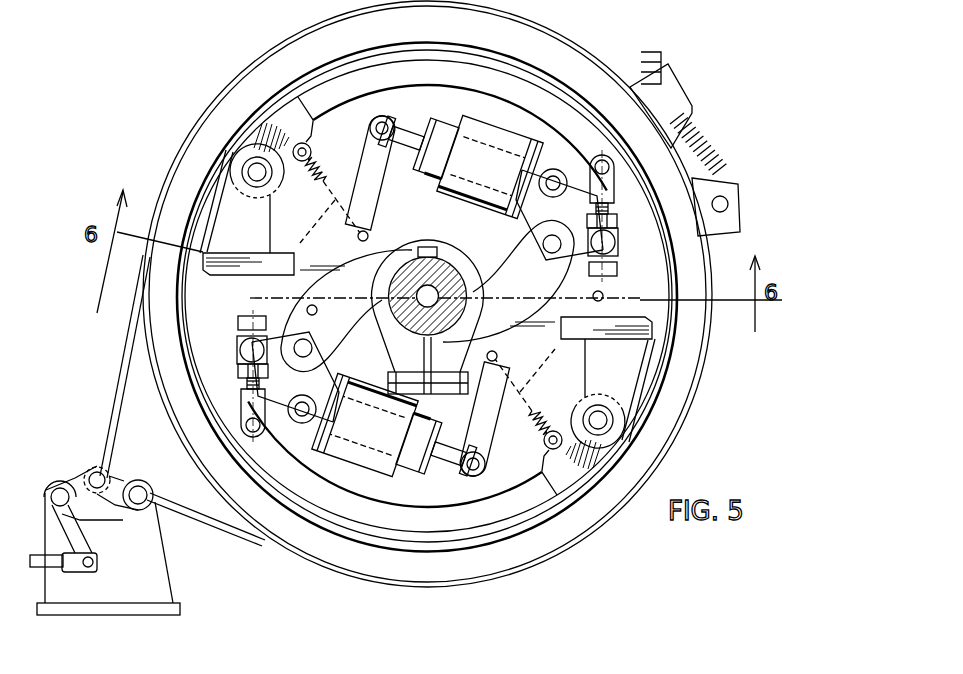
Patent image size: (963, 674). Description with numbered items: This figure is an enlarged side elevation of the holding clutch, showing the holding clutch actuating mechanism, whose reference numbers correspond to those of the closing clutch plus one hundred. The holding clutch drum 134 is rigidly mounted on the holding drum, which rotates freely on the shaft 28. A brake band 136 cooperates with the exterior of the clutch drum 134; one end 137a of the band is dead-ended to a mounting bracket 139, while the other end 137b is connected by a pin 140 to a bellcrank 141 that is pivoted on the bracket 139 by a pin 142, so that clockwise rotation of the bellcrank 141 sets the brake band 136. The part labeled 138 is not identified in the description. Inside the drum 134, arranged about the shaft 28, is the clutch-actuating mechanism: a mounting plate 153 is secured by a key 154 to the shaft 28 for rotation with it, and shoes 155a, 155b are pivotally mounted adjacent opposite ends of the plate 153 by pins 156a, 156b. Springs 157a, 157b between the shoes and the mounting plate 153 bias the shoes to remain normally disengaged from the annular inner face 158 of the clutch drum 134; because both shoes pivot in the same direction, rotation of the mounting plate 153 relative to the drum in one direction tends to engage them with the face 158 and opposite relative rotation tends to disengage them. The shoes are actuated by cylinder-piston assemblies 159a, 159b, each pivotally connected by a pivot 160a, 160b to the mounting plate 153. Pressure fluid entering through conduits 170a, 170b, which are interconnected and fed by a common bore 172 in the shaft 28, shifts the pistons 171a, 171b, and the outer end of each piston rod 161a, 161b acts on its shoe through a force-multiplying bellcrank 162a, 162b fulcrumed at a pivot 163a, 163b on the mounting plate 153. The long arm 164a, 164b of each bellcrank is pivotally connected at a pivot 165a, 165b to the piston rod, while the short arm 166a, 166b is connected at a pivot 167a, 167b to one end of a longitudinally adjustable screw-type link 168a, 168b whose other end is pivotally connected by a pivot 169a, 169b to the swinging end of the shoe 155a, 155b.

The shaft 28 is at (447, 267).
The holding clutch drum 134 is at (193, 412).
The brake band 136 is at (220, 100).
The end of brake band 137a is at (180, 518).
The other end of brake band 137b is at (110, 433).
The pivot pin 138 is at (140, 490).
The mounting bracket 139 is at (150, 580).
The pin 140 is at (92, 470).
The bellcrank 141 is at (78, 478).
The pin 142 is at (60, 492).
The mounting plate 153 is at (253, 219).
The key 154 is at (422, 248).
The shoe 155a is at (398, 513).
The shoe 155b is at (305, 117).
The pin 156a is at (600, 421).
The pin 156b is at (255, 171).
The spring 157a is at (550, 433).
The spring 157b is at (326, 170).
The annular inner face 158 is at (179, 288).
The cylinder-piston assembly 159a is at (462, 126).
The cylinder-piston assembly 159b is at (384, 470).
The pivot 160a is at (555, 178).
The pivot 160b is at (301, 417).
The piston rod 161a is at (417, 140).
The piston rod 161b is at (438, 457).
The bellcrank 162a is at (333, 238).
The bellcrank 162b is at (513, 365).
The pivot 163a is at (310, 352).
The pivot 163b is at (544, 241).
The long arm 164a is at (372, 188).
The long arm 164b is at (482, 404).
The pivot 165a is at (370, 128).
The pivot 165b is at (486, 465).
The short arm 166a is at (236, 341).
The short arm 166b is at (614, 246).
The pivot 167a is at (240, 352).
The pivot 167b is at (612, 238).
The screw-type link 168a is at (247, 387).
The screw-type link 168b is at (612, 206).
The pivot 169a is at (244, 420).
The pivot 169b is at (608, 173).
The conduit 170a is at (603, 294).
The conduit 170b is at (307, 310).
The piston 171a is at (520, 153).
The piston 171b is at (333, 468).
The bore 172 is at (429, 292).